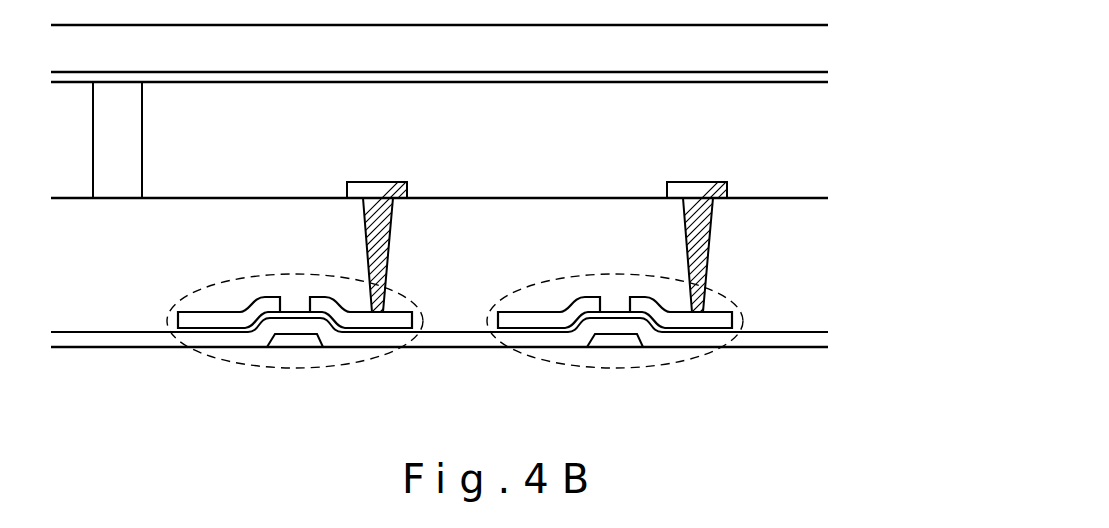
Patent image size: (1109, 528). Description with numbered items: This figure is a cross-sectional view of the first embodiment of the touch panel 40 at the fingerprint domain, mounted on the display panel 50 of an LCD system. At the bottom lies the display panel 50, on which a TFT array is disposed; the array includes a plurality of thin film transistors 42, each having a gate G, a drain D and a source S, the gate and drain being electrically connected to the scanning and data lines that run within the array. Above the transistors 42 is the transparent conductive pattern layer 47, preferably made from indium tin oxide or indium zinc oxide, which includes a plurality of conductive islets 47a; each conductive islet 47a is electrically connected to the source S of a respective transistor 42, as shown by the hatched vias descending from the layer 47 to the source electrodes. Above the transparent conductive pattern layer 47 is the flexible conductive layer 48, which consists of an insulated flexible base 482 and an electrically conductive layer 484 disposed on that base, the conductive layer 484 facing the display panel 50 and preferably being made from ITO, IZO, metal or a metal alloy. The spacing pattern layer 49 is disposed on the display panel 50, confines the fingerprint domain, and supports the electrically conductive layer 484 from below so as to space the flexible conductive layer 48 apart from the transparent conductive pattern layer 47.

The touch panel 40 is at (495, 224).
The thin film transistor 42 is at (293, 368).
The transparent conductive pattern layer 47 is at (725, 196).
The conductive islet 47a is at (383, 183).
The flexible conductive layer 48 is at (465, 71).
The insulated flexible base 482 is at (806, 62).
The electrically conductive layer 484 is at (727, 77).
The spacing pattern layer 49 is at (132, 157).
The display panel 50 is at (800, 422).